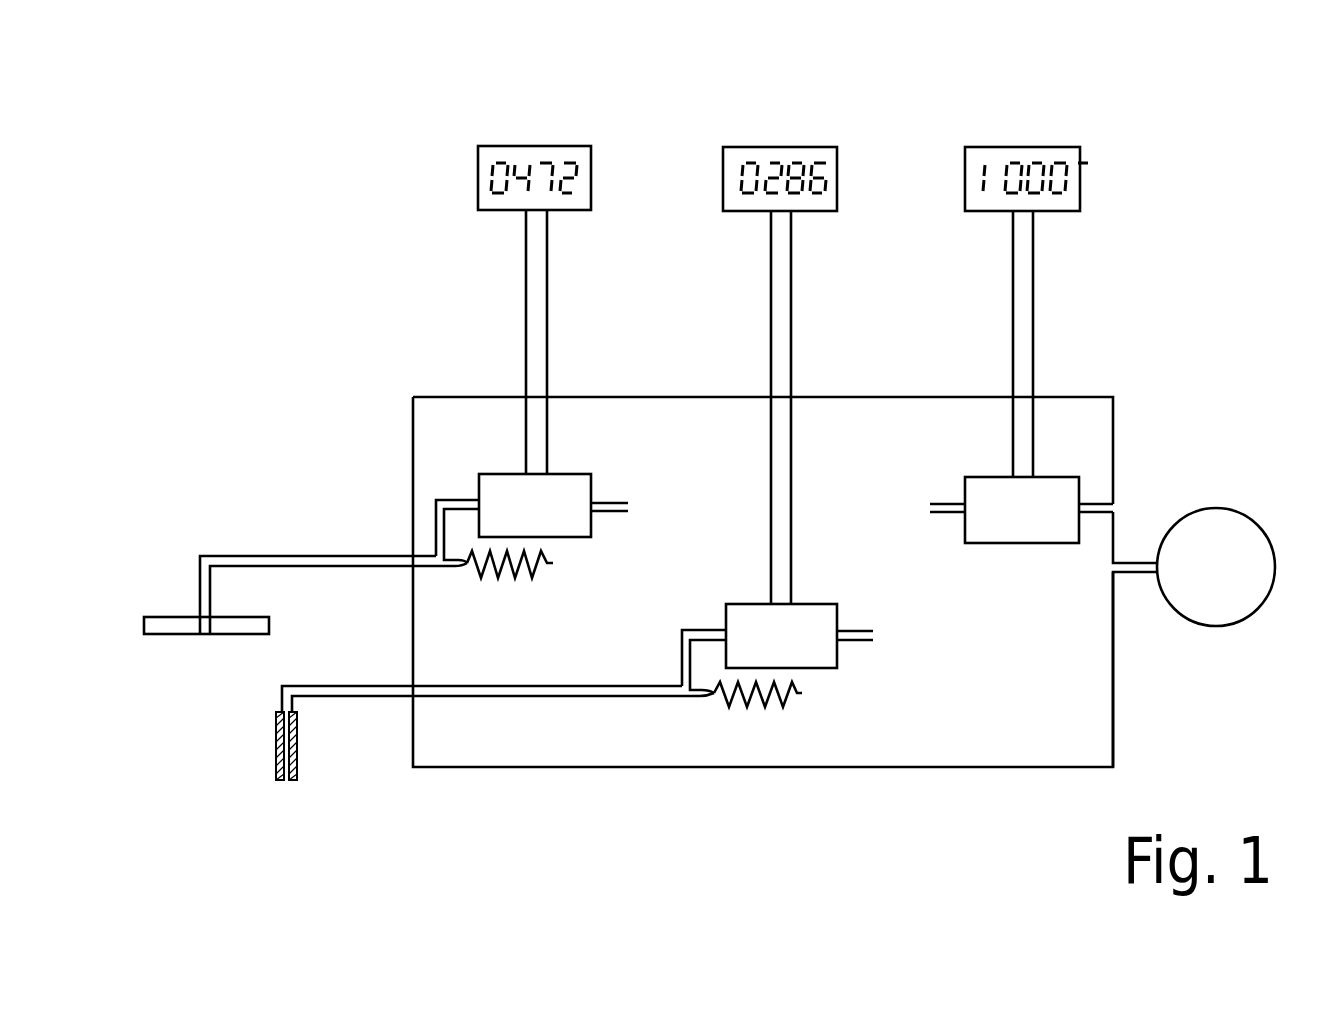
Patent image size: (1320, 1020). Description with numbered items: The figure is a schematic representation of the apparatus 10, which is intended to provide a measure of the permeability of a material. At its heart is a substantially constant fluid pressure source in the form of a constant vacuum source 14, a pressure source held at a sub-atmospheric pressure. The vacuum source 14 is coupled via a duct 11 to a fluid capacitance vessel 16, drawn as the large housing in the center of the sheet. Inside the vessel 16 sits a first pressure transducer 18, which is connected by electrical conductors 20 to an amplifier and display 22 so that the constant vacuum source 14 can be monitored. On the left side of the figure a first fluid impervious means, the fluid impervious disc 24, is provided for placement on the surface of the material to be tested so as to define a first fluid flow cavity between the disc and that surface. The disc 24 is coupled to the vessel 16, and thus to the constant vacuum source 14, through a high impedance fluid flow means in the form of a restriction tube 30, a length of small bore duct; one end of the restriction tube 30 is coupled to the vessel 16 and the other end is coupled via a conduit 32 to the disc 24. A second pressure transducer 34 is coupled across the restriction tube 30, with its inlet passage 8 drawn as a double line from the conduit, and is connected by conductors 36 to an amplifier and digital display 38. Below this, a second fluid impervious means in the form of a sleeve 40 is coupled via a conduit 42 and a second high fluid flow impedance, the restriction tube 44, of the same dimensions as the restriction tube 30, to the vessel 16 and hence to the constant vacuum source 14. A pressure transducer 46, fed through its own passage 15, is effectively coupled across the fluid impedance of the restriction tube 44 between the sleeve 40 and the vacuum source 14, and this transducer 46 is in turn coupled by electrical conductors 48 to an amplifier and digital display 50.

The apparatus 10 is at (341, 132).
The amplifier and digital display 38 is at (553, 158).
The amplifier and digital display 50 is at (790, 160).
The amplifier and display 22 is at (1018, 158).
The conductors 36 is at (524, 288).
The electrical conductors 48 is at (767, 297).
The electrical conductors 20 is at (1012, 305).
The second pressure transducer 34 is at (521, 497).
The first inlet passage 8 is at (437, 498).
The conduit 32 is at (300, 565).
The fluid impervious disc 24 is at (177, 628).
The restriction tube 30 is at (514, 582).
The pressure transducer 46 is at (808, 640).
The second inlet passage 15 is at (703, 623).
The conduit 42 is at (633, 705).
The sleeve 40 is at (295, 745).
The restriction tube 44 is at (764, 712).
The first pressure transducer 18 is at (1048, 498).
The duct 11 is at (1131, 577).
The constant vacuum source 14 is at (1226, 549).
The fluid capacitance vessel 16 is at (1105, 735).